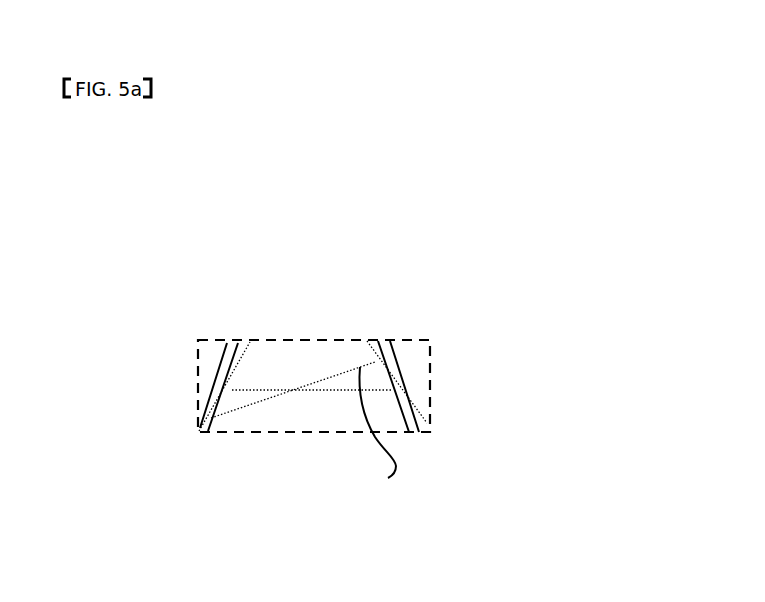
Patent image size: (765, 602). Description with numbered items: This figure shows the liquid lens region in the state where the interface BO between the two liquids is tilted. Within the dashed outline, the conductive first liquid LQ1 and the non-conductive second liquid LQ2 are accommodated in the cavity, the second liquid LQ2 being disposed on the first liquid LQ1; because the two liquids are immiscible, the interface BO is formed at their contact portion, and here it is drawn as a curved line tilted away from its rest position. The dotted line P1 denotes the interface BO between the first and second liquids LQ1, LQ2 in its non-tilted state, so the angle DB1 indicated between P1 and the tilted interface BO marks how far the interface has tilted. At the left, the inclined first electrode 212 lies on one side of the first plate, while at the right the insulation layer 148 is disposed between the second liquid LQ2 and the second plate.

The first electrode 212 is at (218, 363).
The insulation layer 148 is at (403, 412).
The first liquid LQ1 is at (318, 413).
The second liquid LQ2 is at (288, 372).
The interface in non-tilted state P1 is at (265, 390).
The first angle DB1 is at (341, 387).
The interface BO is at (378, 431).